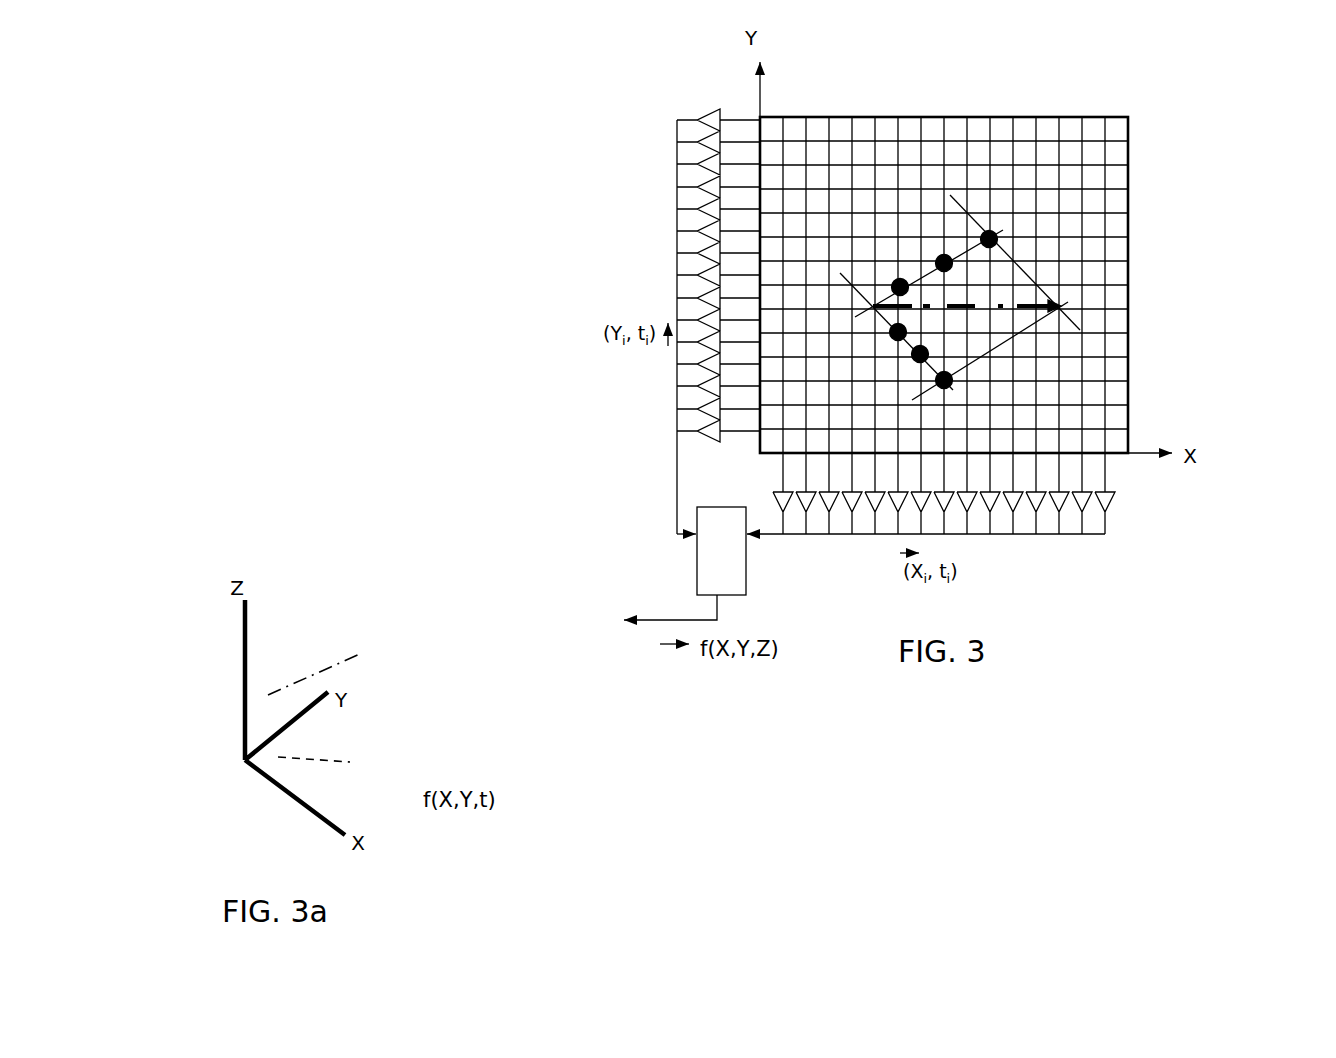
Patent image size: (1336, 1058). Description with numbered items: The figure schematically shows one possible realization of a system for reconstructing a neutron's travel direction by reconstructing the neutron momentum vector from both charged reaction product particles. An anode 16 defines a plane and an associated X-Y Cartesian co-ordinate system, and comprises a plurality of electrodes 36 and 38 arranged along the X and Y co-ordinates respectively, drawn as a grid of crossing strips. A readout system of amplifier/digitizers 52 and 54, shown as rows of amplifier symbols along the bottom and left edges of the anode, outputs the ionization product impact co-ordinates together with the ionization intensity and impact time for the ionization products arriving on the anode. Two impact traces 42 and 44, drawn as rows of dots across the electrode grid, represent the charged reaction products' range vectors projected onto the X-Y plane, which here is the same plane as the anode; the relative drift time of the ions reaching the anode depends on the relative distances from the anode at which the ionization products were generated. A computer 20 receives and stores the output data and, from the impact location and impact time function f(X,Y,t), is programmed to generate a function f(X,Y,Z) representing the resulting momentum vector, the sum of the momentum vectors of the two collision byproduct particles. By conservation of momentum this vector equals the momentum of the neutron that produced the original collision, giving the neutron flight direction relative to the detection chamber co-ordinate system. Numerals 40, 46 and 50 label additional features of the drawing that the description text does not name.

In FIG. 3, the anode 16 is at (1034, 285).
In FIG. 3, the computer 20 is at (685, 563).
In FIG. 3, the electrodes 36 is at (1117, 357).
In FIG. 3, the electrodes 38 is at (1105, 273).
In FIG. 3, the event position 40 is at (993, 230).
In FIG. 3, the impact trace 42 is at (918, 268).
In FIG. 3, the impact trace 44 is at (906, 345).
In FIG. 3, the projected path line 46 is at (975, 305).
In FIG. 3A, the projected path line 46 is at (300, 757).
In FIG. 3A, the trajectory line 50 is at (305, 675).
In FIG. 3, the amplifier/digitizers 52 is at (1001, 530).
In FIG. 3, the amplifier/digitizers 54 is at (676, 256).